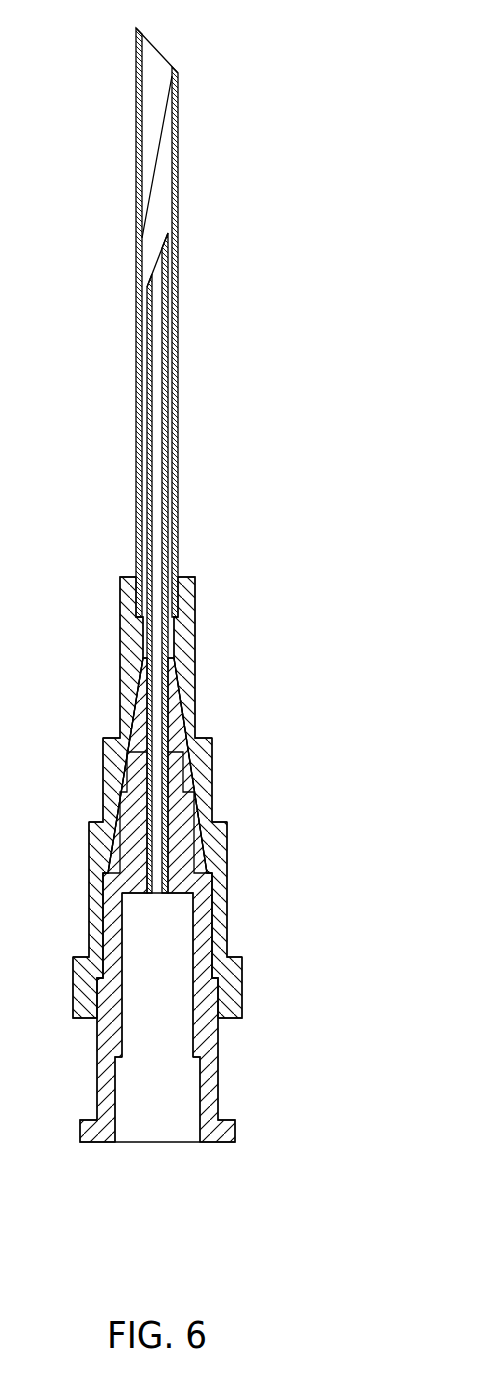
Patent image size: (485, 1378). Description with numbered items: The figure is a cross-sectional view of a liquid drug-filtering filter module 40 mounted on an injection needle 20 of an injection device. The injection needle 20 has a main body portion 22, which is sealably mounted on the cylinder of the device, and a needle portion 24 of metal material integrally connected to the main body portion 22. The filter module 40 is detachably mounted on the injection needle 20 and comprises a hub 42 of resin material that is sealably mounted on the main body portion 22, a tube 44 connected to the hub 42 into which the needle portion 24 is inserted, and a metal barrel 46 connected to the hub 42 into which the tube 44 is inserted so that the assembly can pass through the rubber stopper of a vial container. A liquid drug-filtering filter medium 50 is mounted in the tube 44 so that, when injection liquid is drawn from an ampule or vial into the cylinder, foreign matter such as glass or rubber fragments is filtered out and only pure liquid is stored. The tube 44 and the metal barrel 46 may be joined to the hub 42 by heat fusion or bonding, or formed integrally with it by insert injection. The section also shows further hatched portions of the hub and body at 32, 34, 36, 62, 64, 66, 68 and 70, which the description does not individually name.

The injection needle 20 is at (151, 639).
The main body portion 22 is at (210, 1080).
The needle portion 24 is at (157, 770).
The hub shoulder 32 is at (198, 826).
The hub body wall 34 is at (103, 912).
The luer body 36 is at (156, 900).
The filter module 40 is at (143, 460).
The hub 42 is at (143, 815).
The tube 44 is at (143, 258).
The metal barrel 46 is at (177, 256).
The liquid drug-filtering filter medium 50 is at (158, 162).
The hub bore 62 is at (177, 632).
The hub upper wall 64 is at (128, 594).
The conical bore 66 is at (172, 712).
The inner cavity 68 is at (203, 918).
The flange 70 is at (106, 1008).